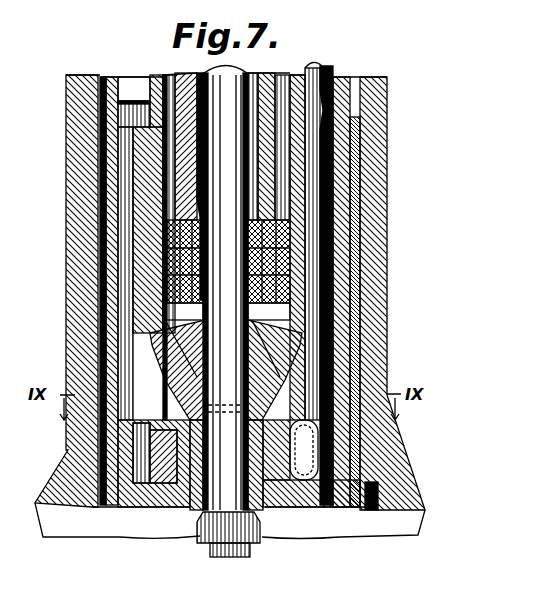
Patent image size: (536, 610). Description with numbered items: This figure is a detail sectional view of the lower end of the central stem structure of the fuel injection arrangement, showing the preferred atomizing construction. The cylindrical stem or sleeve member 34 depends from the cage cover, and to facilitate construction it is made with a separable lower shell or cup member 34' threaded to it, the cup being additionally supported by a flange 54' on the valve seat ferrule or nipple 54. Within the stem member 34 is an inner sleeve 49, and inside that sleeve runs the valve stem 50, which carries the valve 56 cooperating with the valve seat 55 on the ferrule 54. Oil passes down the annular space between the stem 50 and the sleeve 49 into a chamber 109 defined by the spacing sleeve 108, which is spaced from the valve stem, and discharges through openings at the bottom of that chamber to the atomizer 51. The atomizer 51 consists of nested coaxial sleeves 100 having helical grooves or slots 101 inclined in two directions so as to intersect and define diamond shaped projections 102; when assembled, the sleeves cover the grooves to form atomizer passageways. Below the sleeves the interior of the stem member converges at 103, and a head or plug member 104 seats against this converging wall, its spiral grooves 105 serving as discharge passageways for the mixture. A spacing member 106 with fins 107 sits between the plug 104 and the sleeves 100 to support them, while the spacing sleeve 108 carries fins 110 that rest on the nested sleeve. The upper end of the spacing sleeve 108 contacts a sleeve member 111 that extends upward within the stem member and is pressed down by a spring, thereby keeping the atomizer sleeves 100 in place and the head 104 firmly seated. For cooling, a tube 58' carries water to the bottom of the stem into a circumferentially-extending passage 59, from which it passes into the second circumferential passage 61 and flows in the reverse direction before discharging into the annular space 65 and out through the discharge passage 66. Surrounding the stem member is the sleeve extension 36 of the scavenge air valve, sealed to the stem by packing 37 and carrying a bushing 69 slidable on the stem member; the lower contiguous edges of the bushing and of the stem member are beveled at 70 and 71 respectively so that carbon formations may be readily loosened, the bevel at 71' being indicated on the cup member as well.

The cylindrical stem or sleeve member 34 is at (404, 293).
The separable lower shell or cup member 34' is at (62, 291).
The sleeve extension 36 is at (290, 218).
The packing 37 is at (365, 365).
The sleeve 49 is at (250, 80).
The valve stem 50 is at (205, 68).
The atomizer 51 is at (300, 260).
The valve seat ferrule 54 is at (243, 495).
The flange 54' is at (294, 508).
The valve seat 55 is at (187, 517).
The valve 56 is at (220, 523).
The tube 58' is at (384, 285).
The circumferentially-extending passage 59 is at (143, 510).
The second circumferential passage 61 is at (102, 370).
The annular space 65 is at (190, 254).
The discharge passage 66 is at (148, 103).
The bushing 69 is at (300, 313).
The beveled edge of bushing 70 is at (97, 508).
The beveled edge of sleeve member 71 is at (215, 554).
The base 71' is at (311, 506).
The coaxial sleeves 100 is at (300, 227).
The helical grooves or slots 101 is at (195, 268).
The diamond shaped projections 102 is at (167, 233).
The converging wall 103 is at (340, 338).
The head or plug member 104 is at (350, 432).
The spiral grooves 105 is at (360, 375).
The spacing member 106 is at (300, 305).
The fins 107 is at (245, 312).
The sleeve or spacing member 108 is at (192, 160).
The chamber 109 is at (200, 140).
The fins 110 is at (275, 195).
The sleeve member 111 is at (322, 68).